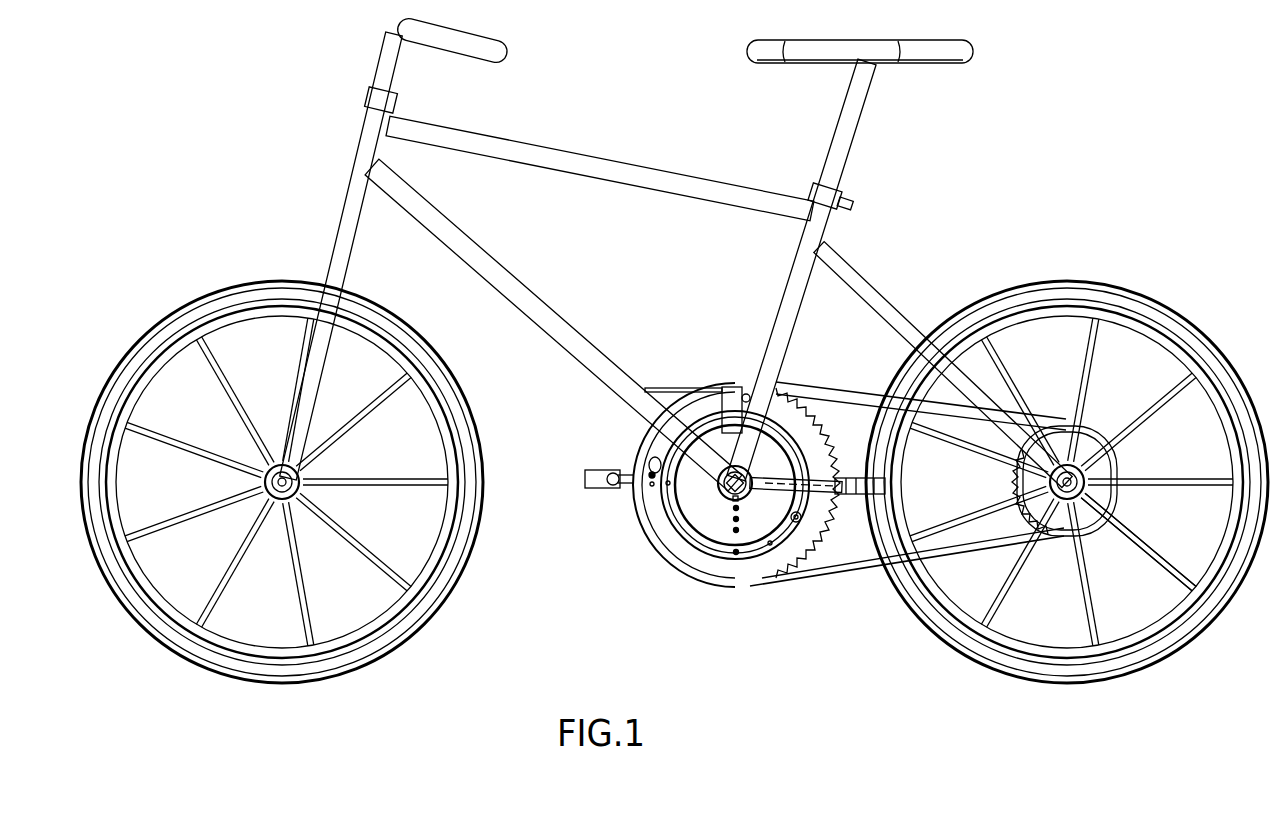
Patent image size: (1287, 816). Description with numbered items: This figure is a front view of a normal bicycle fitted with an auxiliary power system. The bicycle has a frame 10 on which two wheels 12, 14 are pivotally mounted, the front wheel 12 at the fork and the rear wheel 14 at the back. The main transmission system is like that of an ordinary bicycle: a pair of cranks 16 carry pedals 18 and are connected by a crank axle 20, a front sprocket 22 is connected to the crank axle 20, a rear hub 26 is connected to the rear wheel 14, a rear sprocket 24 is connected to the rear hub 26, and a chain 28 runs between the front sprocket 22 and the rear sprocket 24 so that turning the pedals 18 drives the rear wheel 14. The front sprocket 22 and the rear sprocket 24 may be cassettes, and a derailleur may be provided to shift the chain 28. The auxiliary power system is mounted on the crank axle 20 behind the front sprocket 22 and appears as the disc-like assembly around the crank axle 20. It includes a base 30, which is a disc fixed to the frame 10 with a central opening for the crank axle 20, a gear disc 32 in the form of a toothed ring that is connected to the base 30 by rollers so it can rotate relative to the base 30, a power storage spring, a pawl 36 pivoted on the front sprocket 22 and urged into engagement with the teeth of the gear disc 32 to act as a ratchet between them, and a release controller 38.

The frame 10 is at (557, 160).
The wheel 12 is at (165, 330).
The wheel 14 is at (1152, 300).
The crank 16 is at (790, 512).
The pedal 18 is at (840, 497).
The crank axle 20 is at (730, 505).
The front sprocket 22 is at (687, 555).
The rear sprocket 24 is at (1060, 444).
The rear hub 26 is at (1177, 603).
The chain 28 is at (953, 553).
The base 30 is at (678, 500).
The gear disc 32 is at (670, 523).
The pawl 36 is at (653, 460).
The release controller 38 is at (723, 387).